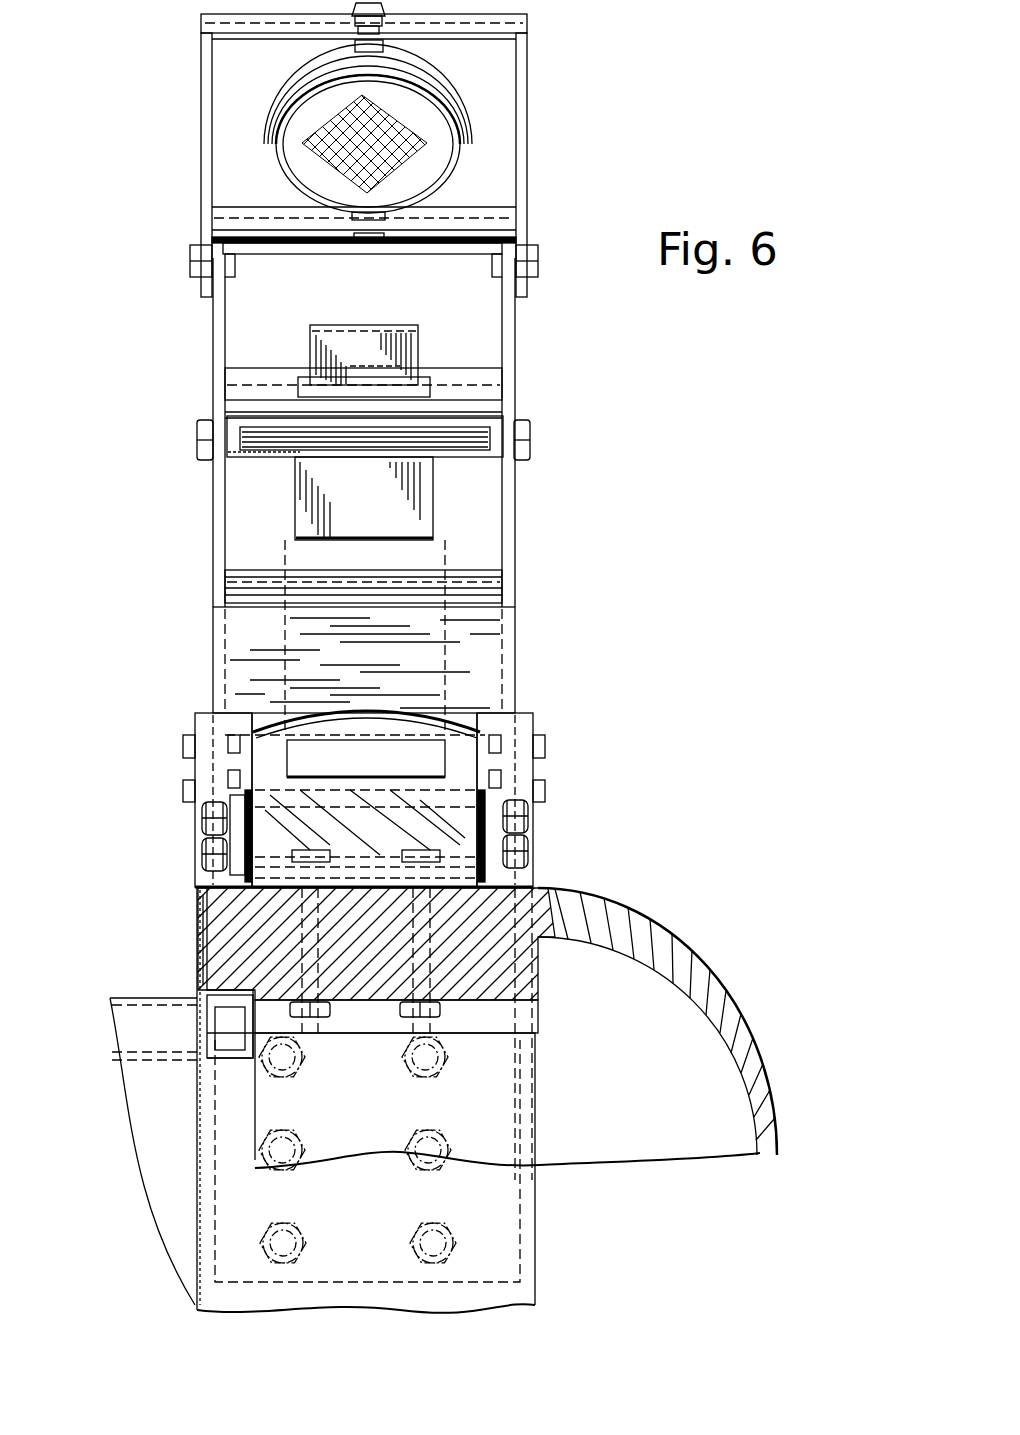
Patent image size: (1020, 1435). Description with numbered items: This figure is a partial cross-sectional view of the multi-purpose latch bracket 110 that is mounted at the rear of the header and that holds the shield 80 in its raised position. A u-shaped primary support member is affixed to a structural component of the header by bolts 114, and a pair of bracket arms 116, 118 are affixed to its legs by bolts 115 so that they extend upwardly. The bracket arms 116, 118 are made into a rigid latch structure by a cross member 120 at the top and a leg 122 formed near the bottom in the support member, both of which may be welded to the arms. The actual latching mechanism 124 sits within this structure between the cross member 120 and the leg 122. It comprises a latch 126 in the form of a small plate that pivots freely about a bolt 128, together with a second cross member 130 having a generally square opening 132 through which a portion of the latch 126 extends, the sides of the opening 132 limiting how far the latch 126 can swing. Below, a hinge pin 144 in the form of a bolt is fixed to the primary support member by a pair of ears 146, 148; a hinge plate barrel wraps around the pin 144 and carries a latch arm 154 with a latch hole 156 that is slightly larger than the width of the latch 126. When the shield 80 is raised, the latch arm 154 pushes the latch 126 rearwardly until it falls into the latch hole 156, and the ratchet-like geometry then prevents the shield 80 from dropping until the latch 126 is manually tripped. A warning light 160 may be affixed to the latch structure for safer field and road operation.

The shield 80 is at (700, 965).
The multi-purpose latch bracket 110 is at (605, 619).
The bolts 114 is at (414, 1133).
The bolts 115 is at (183, 793).
The bracket arm 116 is at (215, 541).
The bracket arm 118 is at (510, 527).
The cross member 120 is at (395, 247).
The leg 122 is at (490, 578).
The latching mechanism 124 is at (560, 387).
The latch 126 is at (386, 507).
The bolt 128 is at (525, 441).
The second cross member 130 is at (485, 378).
The opening 132 is at (425, 385).
The hinge pin 144 is at (530, 845).
The ear 146 is at (210, 880).
The ear 148 is at (525, 879).
The latch arm 154 is at (480, 735).
The latch hole 156 is at (392, 740).
The warning light 160 is at (562, 105).